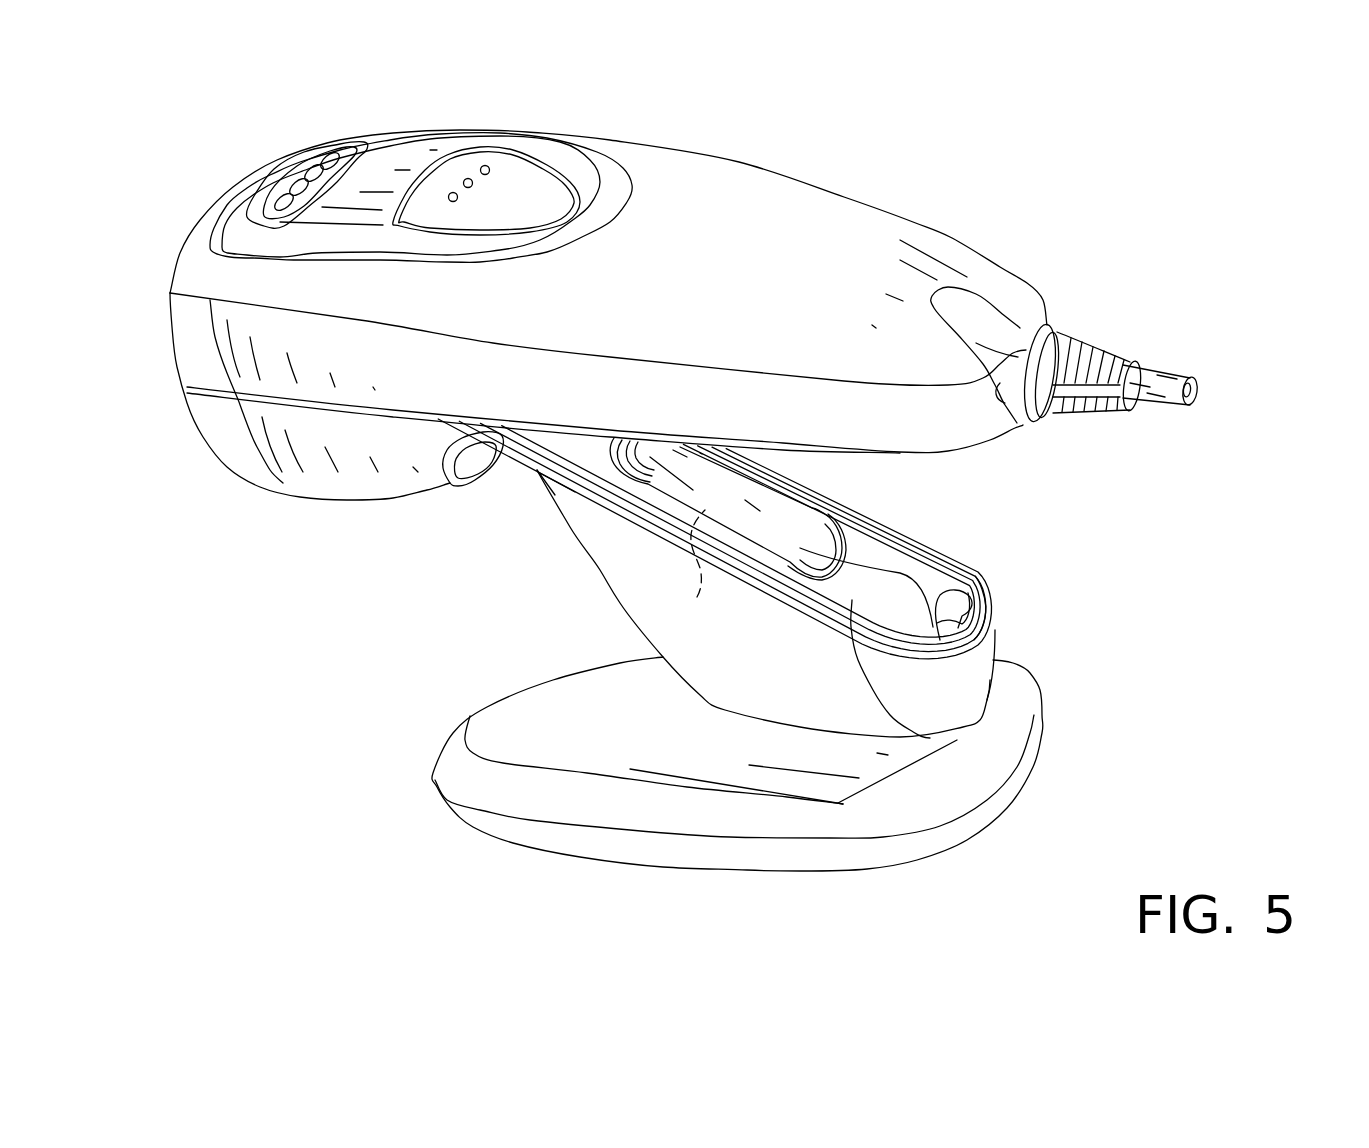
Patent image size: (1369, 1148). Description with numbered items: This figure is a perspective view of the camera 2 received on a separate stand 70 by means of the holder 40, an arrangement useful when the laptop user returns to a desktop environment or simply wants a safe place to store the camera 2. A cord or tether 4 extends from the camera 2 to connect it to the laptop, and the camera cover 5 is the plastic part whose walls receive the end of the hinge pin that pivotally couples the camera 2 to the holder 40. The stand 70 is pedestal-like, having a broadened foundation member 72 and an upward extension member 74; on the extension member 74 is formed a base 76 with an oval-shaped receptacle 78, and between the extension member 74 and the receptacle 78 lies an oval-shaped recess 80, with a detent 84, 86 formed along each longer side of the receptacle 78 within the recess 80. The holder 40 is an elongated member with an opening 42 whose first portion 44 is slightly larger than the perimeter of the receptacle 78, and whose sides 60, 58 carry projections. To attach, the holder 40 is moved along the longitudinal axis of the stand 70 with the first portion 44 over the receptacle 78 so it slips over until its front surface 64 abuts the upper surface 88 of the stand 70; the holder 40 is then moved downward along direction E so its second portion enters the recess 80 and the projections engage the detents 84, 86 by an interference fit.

The camera 2 is at (844, 207).
The cord or tether 4 is at (1161, 379).
The camera cover 5 is at (347, 487).
The holder 40 is at (532, 468).
The opening 42 is at (923, 550).
The first portion 44 is at (940, 627).
The side 58 is at (777, 597).
The side 60 is at (950, 500).
The front surface 64 is at (797, 613).
The stand 70 is at (366, 806).
The foundation member 72 is at (503, 829).
The extension member 74 is at (630, 600).
The base 76 is at (872, 536).
The receptacle 78 is at (815, 525).
The recess 80 is at (860, 613).
The detent 84 is at (697, 597).
The detent 86 is at (795, 444).
The upper surface 88 is at (930, 607).